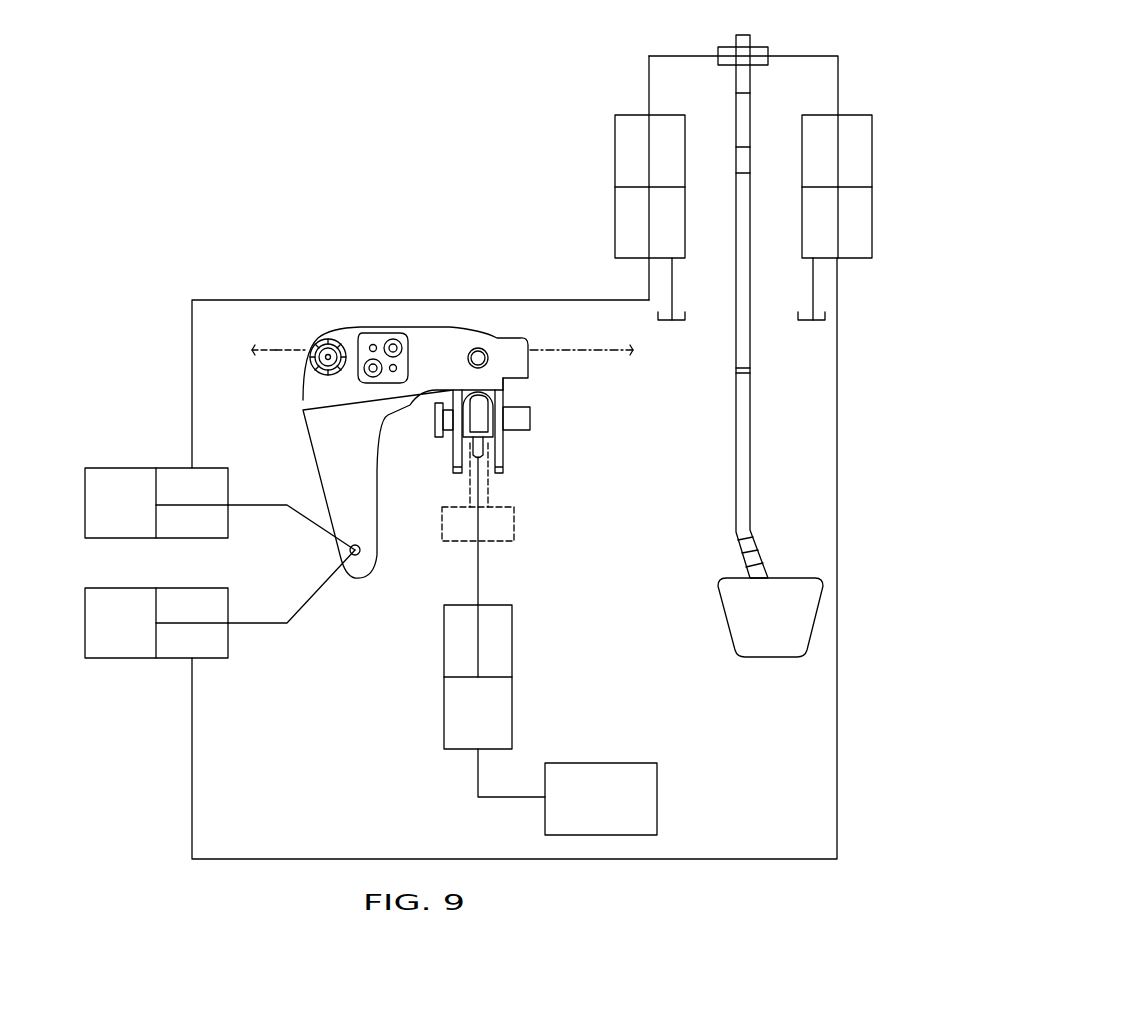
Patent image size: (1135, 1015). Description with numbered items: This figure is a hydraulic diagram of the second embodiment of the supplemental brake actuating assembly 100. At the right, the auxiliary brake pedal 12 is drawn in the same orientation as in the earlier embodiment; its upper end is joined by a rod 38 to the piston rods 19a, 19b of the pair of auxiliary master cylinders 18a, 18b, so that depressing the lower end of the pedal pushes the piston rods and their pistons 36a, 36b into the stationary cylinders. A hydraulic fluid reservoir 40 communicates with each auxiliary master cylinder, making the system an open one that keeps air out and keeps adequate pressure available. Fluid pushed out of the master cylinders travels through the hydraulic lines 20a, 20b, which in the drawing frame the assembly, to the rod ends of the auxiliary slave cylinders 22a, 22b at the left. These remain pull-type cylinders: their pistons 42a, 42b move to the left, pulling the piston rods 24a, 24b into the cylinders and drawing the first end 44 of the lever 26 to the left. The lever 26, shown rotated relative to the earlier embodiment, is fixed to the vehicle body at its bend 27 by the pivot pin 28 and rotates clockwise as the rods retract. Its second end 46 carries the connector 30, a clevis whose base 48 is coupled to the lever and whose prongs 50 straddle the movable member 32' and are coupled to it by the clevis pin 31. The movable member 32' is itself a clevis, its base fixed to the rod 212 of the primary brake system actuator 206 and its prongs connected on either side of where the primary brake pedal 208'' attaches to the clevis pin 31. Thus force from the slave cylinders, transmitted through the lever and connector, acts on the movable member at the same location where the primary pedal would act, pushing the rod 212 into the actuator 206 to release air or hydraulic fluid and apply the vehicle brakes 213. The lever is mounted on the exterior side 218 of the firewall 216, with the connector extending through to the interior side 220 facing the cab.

The auxiliary brake pedal 12 is at (745, 485).
The auxiliary master cylinder 18a is at (802, 150).
The auxiliary master cylinder 18b is at (615, 152).
The piston rod 19a is at (838, 85).
The piston rod 19b is at (649, 85).
The hydraulic line 20a is at (688, 859).
The hydraulic line 20b is at (425, 300).
The auxiliary slave cylinder 22a is at (122, 658).
The auxiliary slave cylinder 22b is at (128, 468).
The piston rod 24a is at (262, 623).
The piston rod 24b is at (262, 505).
The lever 26 is at (328, 445).
The bend 27 is at (305, 342).
The pivot pin 28 is at (328, 357).
The connector 30 is at (508, 390).
The clevis pin 31 is at (437, 420).
The movable member 32' is at (516, 449).
The piston 36a is at (820, 187).
The piston 36b is at (632, 187).
The rod 38 is at (760, 47).
The hydraulic fluid reservoir 40 is at (665, 322).
The piston 42a is at (158, 608).
The piston 42b is at (158, 490).
The first end 44 is at (360, 578).
The second end 46 is at (486, 350).
The base 48 is at (513, 350).
The prongs 50 is at (455, 467).
The supplemental brake actuating assembly 100 is at (580, 884).
The primary brake system actuator 206 is at (513, 710).
The primary brake pedal 208'' is at (525, 525).
The rod 212 is at (478, 570).
The vehicle brakes 213 is at (657, 793).
The firewall 216 is at (600, 350).
The exterior side 218 is at (548, 345).
The interior side 220 is at (280, 360).